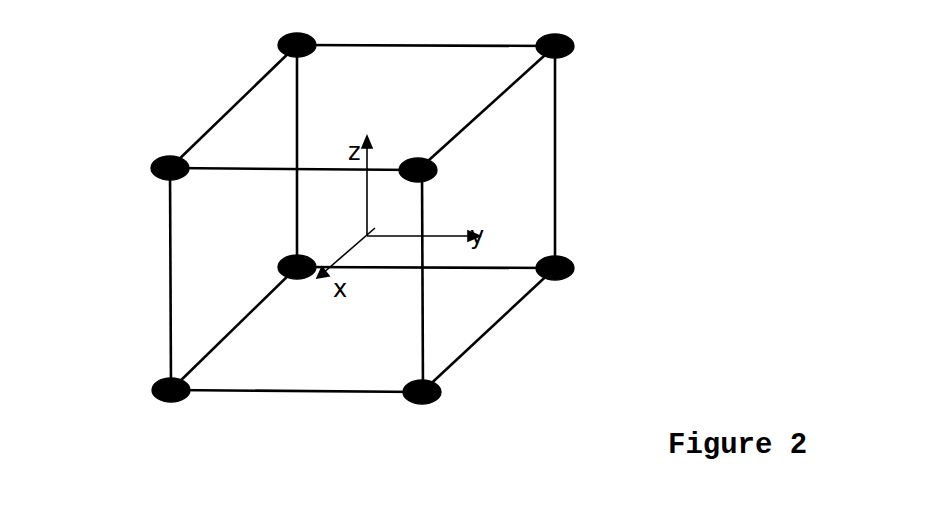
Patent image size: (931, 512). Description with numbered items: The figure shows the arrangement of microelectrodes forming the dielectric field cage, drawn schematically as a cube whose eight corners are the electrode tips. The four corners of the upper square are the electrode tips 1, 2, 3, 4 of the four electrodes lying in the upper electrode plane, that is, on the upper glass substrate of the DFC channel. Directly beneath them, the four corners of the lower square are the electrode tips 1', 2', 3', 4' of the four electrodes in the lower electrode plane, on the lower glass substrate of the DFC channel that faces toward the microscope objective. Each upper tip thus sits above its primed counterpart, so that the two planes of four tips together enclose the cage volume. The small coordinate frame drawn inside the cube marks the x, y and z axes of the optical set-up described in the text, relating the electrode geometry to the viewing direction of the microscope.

The electrode tip 1 is at (151, 169).
The electrode tip 2 is at (437, 173).
The electrode tip 3 is at (576, 44).
The electrode tip 4 is at (280, 44).
The electrode tip 1' is at (151, 392).
The electrode tip 2' is at (448, 391).
The electrode tip 3' is at (579, 273).
The electrode tip 4' is at (281, 274).